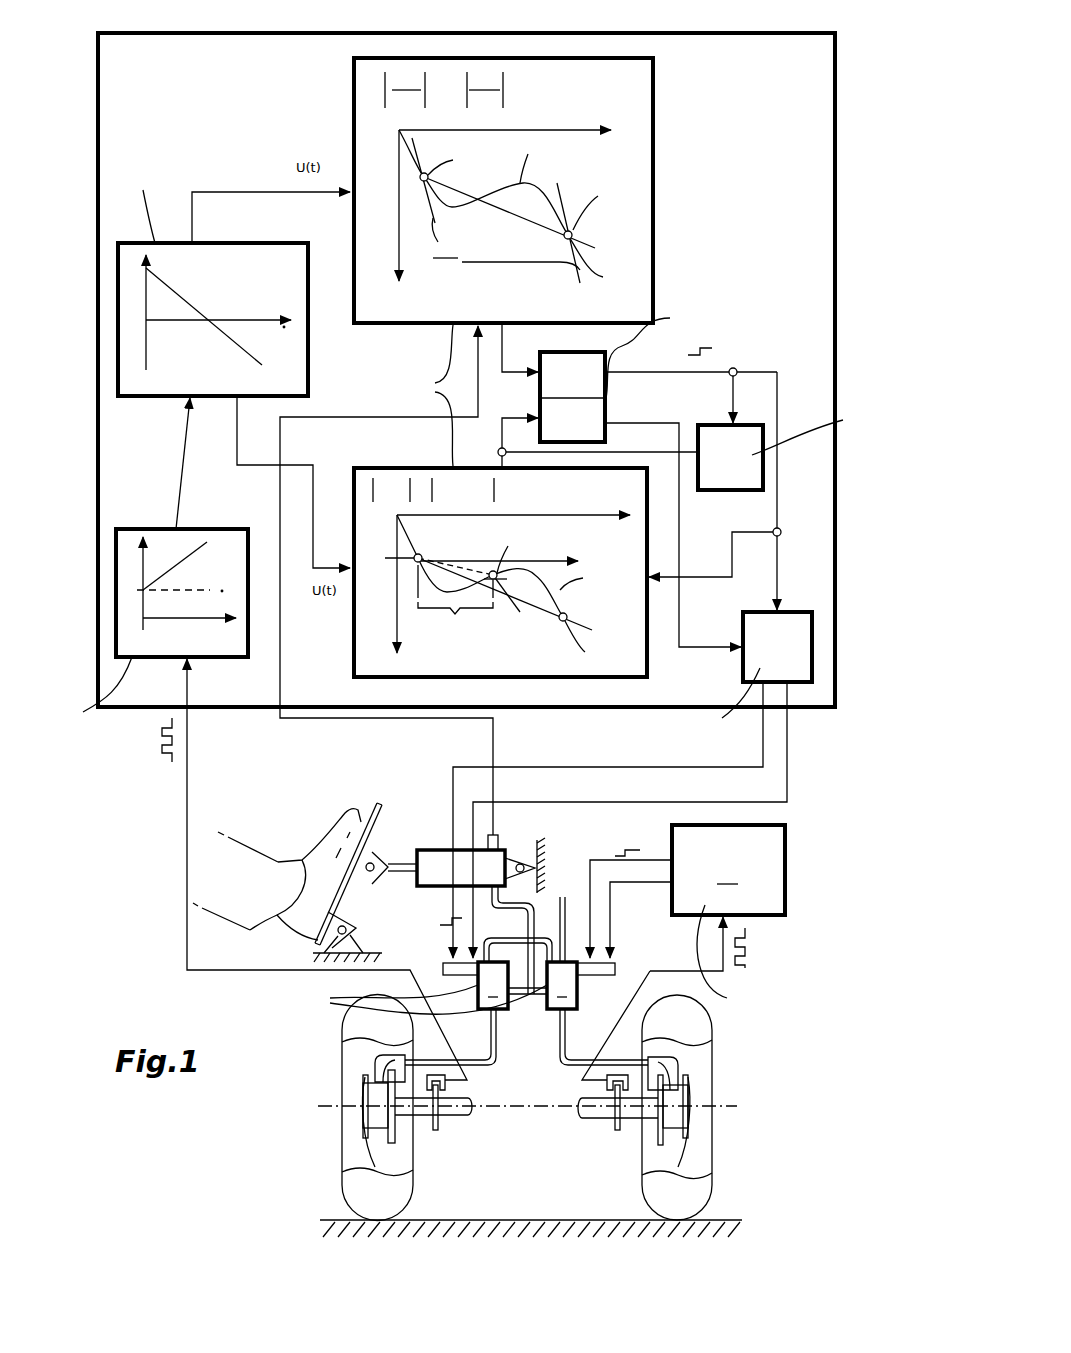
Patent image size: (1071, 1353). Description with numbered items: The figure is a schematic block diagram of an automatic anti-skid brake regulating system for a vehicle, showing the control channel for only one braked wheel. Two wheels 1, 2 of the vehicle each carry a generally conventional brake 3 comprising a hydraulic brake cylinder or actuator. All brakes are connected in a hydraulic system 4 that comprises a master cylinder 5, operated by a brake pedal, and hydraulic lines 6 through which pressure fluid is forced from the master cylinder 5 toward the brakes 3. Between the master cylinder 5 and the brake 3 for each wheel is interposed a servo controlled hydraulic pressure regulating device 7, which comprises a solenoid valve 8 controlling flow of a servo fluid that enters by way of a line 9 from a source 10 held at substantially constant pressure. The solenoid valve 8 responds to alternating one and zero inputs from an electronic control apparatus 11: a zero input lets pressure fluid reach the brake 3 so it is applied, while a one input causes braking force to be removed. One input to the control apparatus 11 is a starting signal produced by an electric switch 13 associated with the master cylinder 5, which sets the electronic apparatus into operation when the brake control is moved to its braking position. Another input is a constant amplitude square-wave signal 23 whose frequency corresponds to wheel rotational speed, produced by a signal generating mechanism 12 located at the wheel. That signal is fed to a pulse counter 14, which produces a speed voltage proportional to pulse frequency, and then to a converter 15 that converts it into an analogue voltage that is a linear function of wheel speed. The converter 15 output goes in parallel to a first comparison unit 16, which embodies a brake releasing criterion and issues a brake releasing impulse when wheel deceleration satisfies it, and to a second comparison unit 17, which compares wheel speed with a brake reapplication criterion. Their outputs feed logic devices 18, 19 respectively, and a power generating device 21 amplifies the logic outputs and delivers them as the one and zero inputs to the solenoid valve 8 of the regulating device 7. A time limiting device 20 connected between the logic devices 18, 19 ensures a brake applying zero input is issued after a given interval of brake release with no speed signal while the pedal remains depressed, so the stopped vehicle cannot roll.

The wheel 1 is at (350, 1150).
The wheel 2 is at (700, 1160).
The brake 3 is at (371, 1066).
The hydraulic system 4 is at (498, 1072).
The master cylinder 5 is at (431, 850).
The hydraulic lines 6 is at (560, 1050).
The hydraulic pressure regulating device 7 is at (404, 968).
The solenoid valve 8 is at (458, 975).
The line 9 is at (518, 940).
The source 10 is at (562, 891).
The electronic control apparatus 11 is at (140, 705).
The rotational speed signal generator 12 is at (611, 1113).
The electric switch 13 is at (499, 840).
The pulse counter 14 is at (172, 527).
The converter 15 is at (155, 398).
The first comparison unit 16 is at (428, 328).
The second comparison unit 17 is at (351, 466).
The logic device 18 is at (538, 390).
The logic device 19 is at (607, 425).
The time limiting device 20 is at (735, 494).
The power generating device 21 is at (741, 667).
The square-wave signal 23 is at (165, 768).